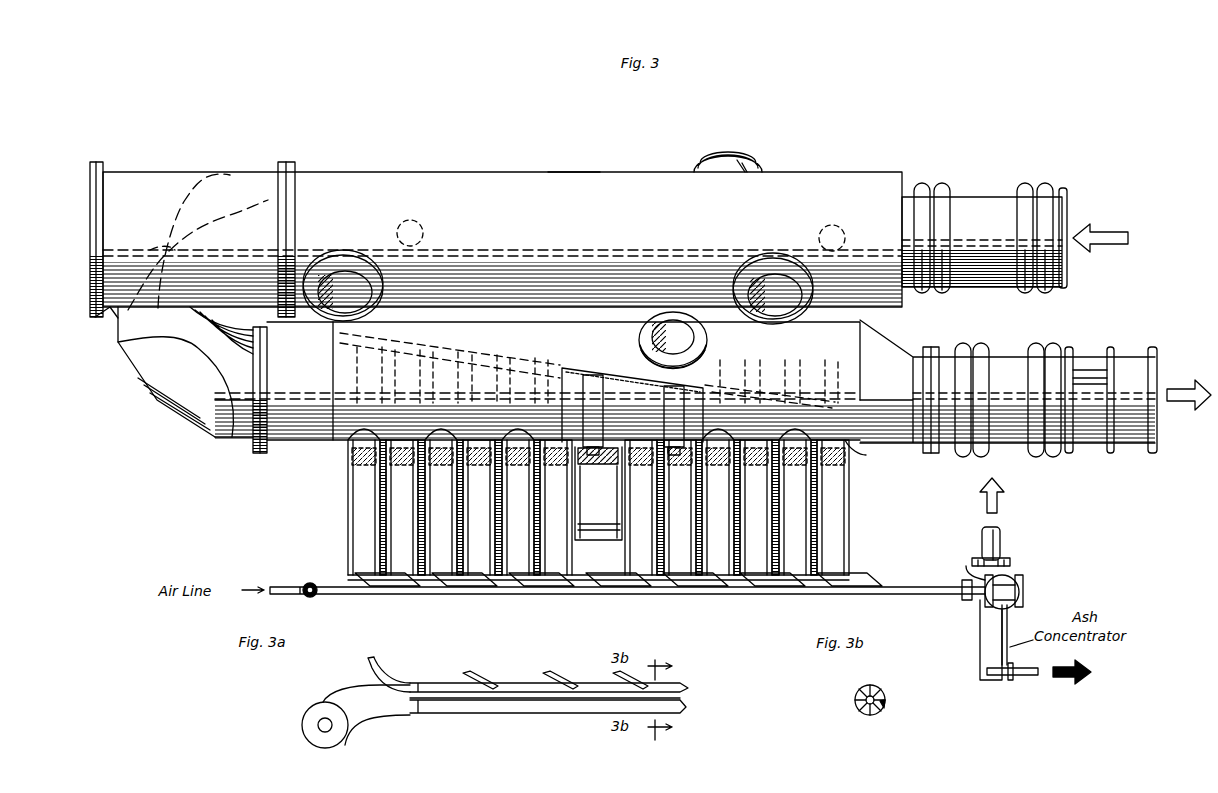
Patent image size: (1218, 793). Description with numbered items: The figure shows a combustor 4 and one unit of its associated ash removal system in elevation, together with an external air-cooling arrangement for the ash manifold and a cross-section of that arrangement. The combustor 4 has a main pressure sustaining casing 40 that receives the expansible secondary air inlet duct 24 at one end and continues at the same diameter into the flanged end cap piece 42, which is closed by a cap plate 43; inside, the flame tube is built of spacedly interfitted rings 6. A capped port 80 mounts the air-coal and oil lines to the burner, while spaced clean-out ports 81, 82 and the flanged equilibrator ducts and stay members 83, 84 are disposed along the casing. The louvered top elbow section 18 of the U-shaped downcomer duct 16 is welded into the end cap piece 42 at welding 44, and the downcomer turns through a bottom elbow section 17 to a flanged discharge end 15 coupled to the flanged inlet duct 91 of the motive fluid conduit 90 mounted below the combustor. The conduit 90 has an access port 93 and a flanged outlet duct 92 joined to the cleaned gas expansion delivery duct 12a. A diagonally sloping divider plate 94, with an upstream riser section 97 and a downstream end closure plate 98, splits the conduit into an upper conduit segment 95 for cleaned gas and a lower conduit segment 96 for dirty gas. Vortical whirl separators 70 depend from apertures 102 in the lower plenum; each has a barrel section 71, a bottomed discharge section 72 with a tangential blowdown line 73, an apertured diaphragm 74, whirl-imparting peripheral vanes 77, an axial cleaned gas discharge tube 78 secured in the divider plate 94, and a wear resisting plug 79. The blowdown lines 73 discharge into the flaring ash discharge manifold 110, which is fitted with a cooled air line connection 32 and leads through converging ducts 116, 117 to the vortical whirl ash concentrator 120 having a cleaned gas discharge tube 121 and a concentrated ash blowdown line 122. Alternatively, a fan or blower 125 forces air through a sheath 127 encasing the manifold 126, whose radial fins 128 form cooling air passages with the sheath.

In FIG. 3, the combustor 4 is at (572, 172).
In FIG. 3, the spacedly interfitted rings 6 is at (460, 312).
In FIG. 3, the cleaned gas expansion delivery duct 12a is at (1006, 358).
In FIG. 3, the flanged discharge end 15 is at (256, 451).
In FIG. 3, the downcomer duct 16 is at (126, 389).
In FIG. 3, the bottom elbow section 17 is at (216, 441).
In FIG. 3, the louvered top elbow section 18 is at (165, 190).
In FIG. 3, the air inlet duct 24 is at (970, 204).
In FIG. 3, the cooled air line connection 32 is at (283, 586).
In FIG. 3, the combustor casing 40 is at (502, 239).
In FIG. 3, the end cap piece 42 is at (209, 239).
In FIG. 3, the cap plate 43 is at (90, 229).
In FIG. 3, the welding 44 is at (106, 317).
In FIG. 3, the vortical whirl separator 70 is at (545, 355).
In FIG. 3, the barrel section 71 is at (350, 492).
In FIG. 3, the bottomed discharge section 72 is at (355, 557).
In FIG. 3, the tangential blowdown line 73 is at (400, 588).
In FIG. 3a, the tangential blowdown line 73 is at (382, 645).
In FIG. 3, the axially apertured diaphragm 74 is at (580, 516).
In FIG. 3, the peripheral vanes 77 is at (600, 442).
In FIG. 3, the cleaned gas discharge tube 78 is at (664, 410).
In FIG. 3a, the wear resisting plug 79 is at (548, 676).
In FIG. 3, the capped port 80 is at (750, 166).
In FIG. 3, the clean-out port 81 is at (773, 283).
In FIG. 3, the clean-out port 82 is at (345, 300).
In FIG. 3, the flanged equilibrator duct and stay member 83 is at (838, 225).
In FIG. 3, the flanged equilibrator duct and stay member 84 is at (410, 220).
In FIG. 3, the motive fluid conduit 90 is at (537, 381).
In FIG. 3, the flanged inlet duct 91 is at (310, 381).
In FIG. 3, the flanged outlet duct 92 is at (1007, 381).
In FIG. 3, the access port 93 is at (700, 342).
In FIG. 3, the diagonally sloping divider plate 94 is at (462, 358).
In FIG. 3, the upper conduit segment 95 is at (793, 347).
In FIG. 3, the lower conduit segment 96 is at (367, 408).
In FIG. 3, the upstream end riser section 97 is at (345, 336).
In FIG. 3, the end closure plate 98 is at (862, 446).
In FIG. 3, the apertures 102 is at (838, 400).
In FIG. 3, the ash discharge manifold 110 is at (552, 595).
In FIG. 3, the converging duct 116 is at (1010, 580).
In FIG. 3, the converging duct 117 is at (975, 576).
In FIG. 3, the vortical whirl ash concentrator 120 is at (972, 639).
In FIG. 3, the cleaned gas discharge tube 121 is at (1000, 548).
In FIG. 3, the concentrated ash blowdown line 122 is at (1023, 676).
In FIG. 3a, the fan or blower 125 is at (302, 718).
In FIG. 3a, the manifold 126 is at (552, 702).
In FIG. 3b, the manifold 126 is at (858, 705).
In FIG. 3a, the sheath 127 is at (431, 683).
In FIG. 3b, the sheath 127 is at (884, 695).
In FIG. 3b, the fins 128 is at (885, 707).